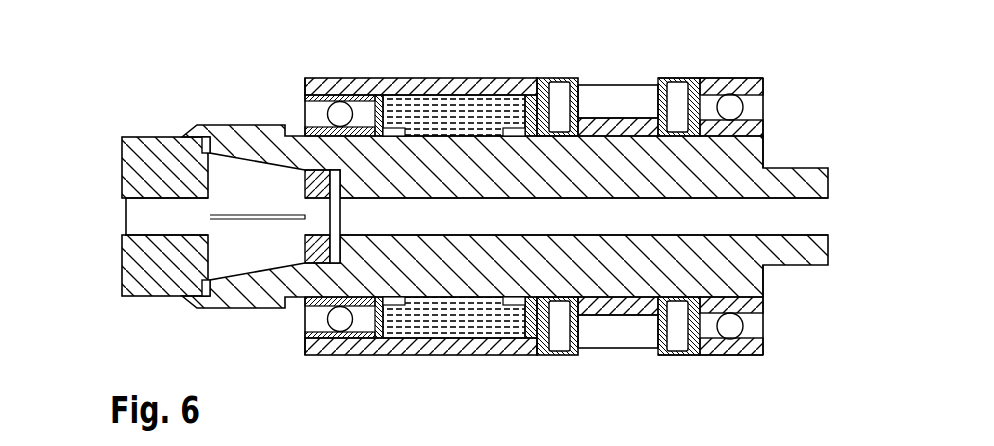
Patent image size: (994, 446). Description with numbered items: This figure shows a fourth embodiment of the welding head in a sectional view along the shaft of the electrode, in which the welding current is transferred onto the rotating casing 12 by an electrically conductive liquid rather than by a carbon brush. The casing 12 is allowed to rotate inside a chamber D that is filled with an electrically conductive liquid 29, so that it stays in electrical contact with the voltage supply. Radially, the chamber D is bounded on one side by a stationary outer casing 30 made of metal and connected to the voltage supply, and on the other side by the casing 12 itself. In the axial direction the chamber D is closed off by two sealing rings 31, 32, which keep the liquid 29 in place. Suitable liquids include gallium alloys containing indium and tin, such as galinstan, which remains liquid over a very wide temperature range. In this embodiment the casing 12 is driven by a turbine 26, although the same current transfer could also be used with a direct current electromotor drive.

The casing 12 is at (611, 268).
The turbine 26 is at (617, 105).
The electrically conductive liquid 29 is at (455, 108).
The stationary outer casing 30 is at (363, 88).
The sealing ring 31 is at (378, 340).
The sealing ring 32 is at (535, 338).
The chamber D is at (457, 325).